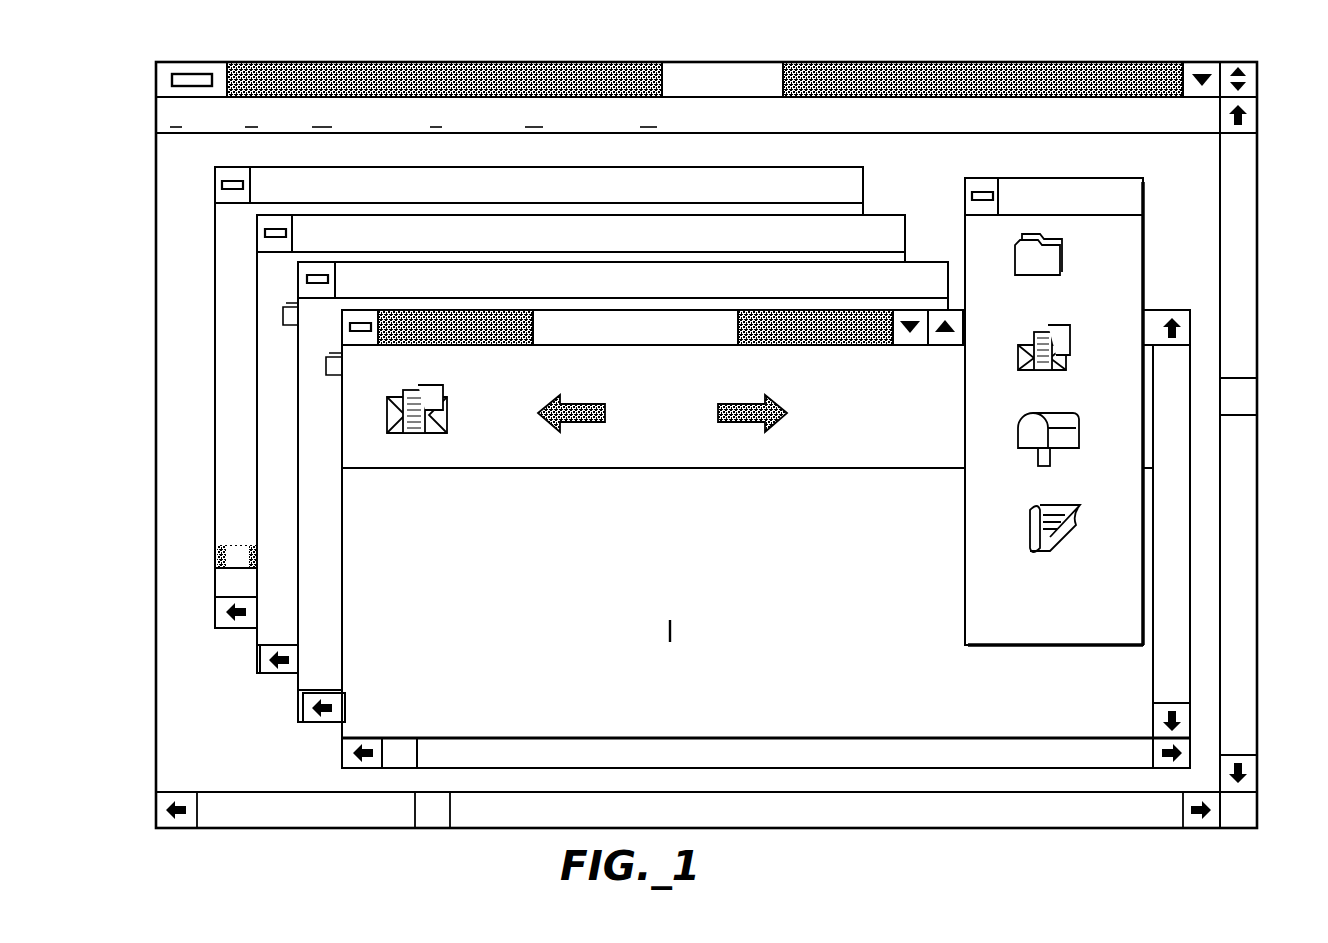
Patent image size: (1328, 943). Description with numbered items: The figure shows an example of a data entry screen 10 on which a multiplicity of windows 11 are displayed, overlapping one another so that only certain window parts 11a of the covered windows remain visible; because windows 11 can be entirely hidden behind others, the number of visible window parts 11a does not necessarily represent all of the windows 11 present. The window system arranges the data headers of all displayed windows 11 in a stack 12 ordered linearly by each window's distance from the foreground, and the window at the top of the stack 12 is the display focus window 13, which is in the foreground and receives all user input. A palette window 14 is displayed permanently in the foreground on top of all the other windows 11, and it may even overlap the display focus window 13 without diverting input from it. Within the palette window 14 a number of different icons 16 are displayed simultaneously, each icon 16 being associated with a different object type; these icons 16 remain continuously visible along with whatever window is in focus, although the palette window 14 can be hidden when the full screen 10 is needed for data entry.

The data entry screen 10 is at (918, 778).
The windows 11 is at (412, 310).
The window parts 11a is at (218, 616).
The stack 12 is at (250, 328).
The display focus window 13 is at (362, 488).
The palette window 14 is at (1050, 178).
The icons 16 is at (1088, 352).